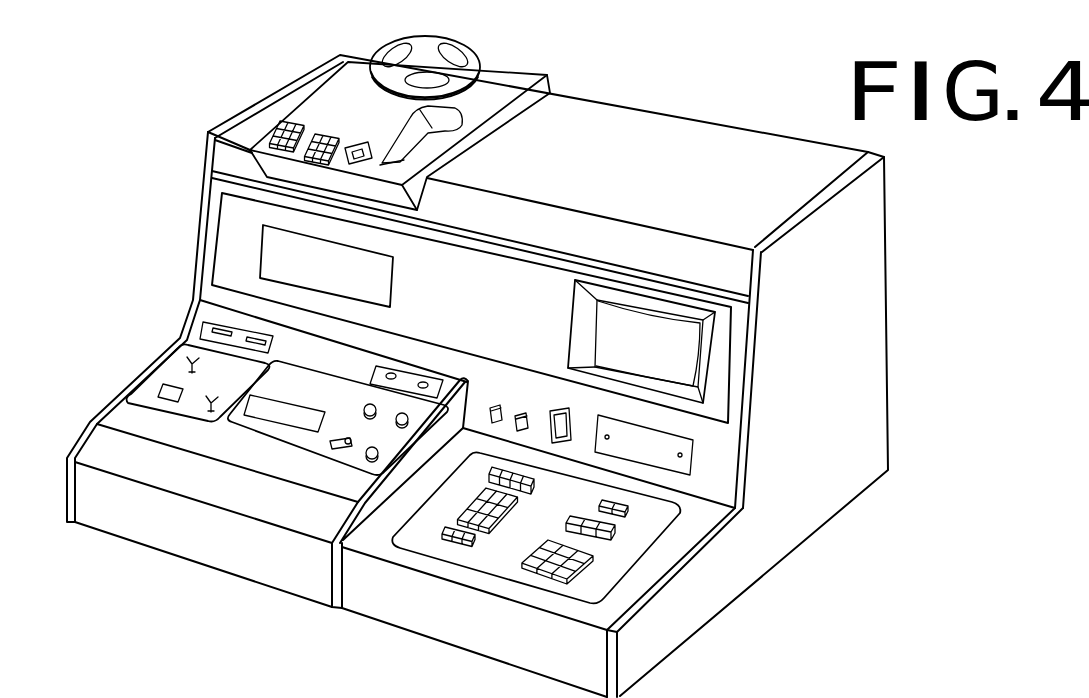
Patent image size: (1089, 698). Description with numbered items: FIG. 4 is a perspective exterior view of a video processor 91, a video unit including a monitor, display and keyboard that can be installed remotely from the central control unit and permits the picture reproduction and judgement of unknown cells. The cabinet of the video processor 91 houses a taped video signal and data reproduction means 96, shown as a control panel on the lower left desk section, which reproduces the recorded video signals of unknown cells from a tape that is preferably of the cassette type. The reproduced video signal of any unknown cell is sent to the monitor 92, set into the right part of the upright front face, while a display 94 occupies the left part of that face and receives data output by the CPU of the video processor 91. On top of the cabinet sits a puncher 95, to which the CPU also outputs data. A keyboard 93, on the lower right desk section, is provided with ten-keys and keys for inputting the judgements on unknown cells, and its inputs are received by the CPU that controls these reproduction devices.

The video processor 91 is at (887, 206).
The monitor 92 is at (690, 347).
The keyboard 93 is at (573, 567).
The display 94 is at (287, 257).
The puncher 95 is at (518, 80).
The taped video signal and data reproduction means 96 is at (298, 428).